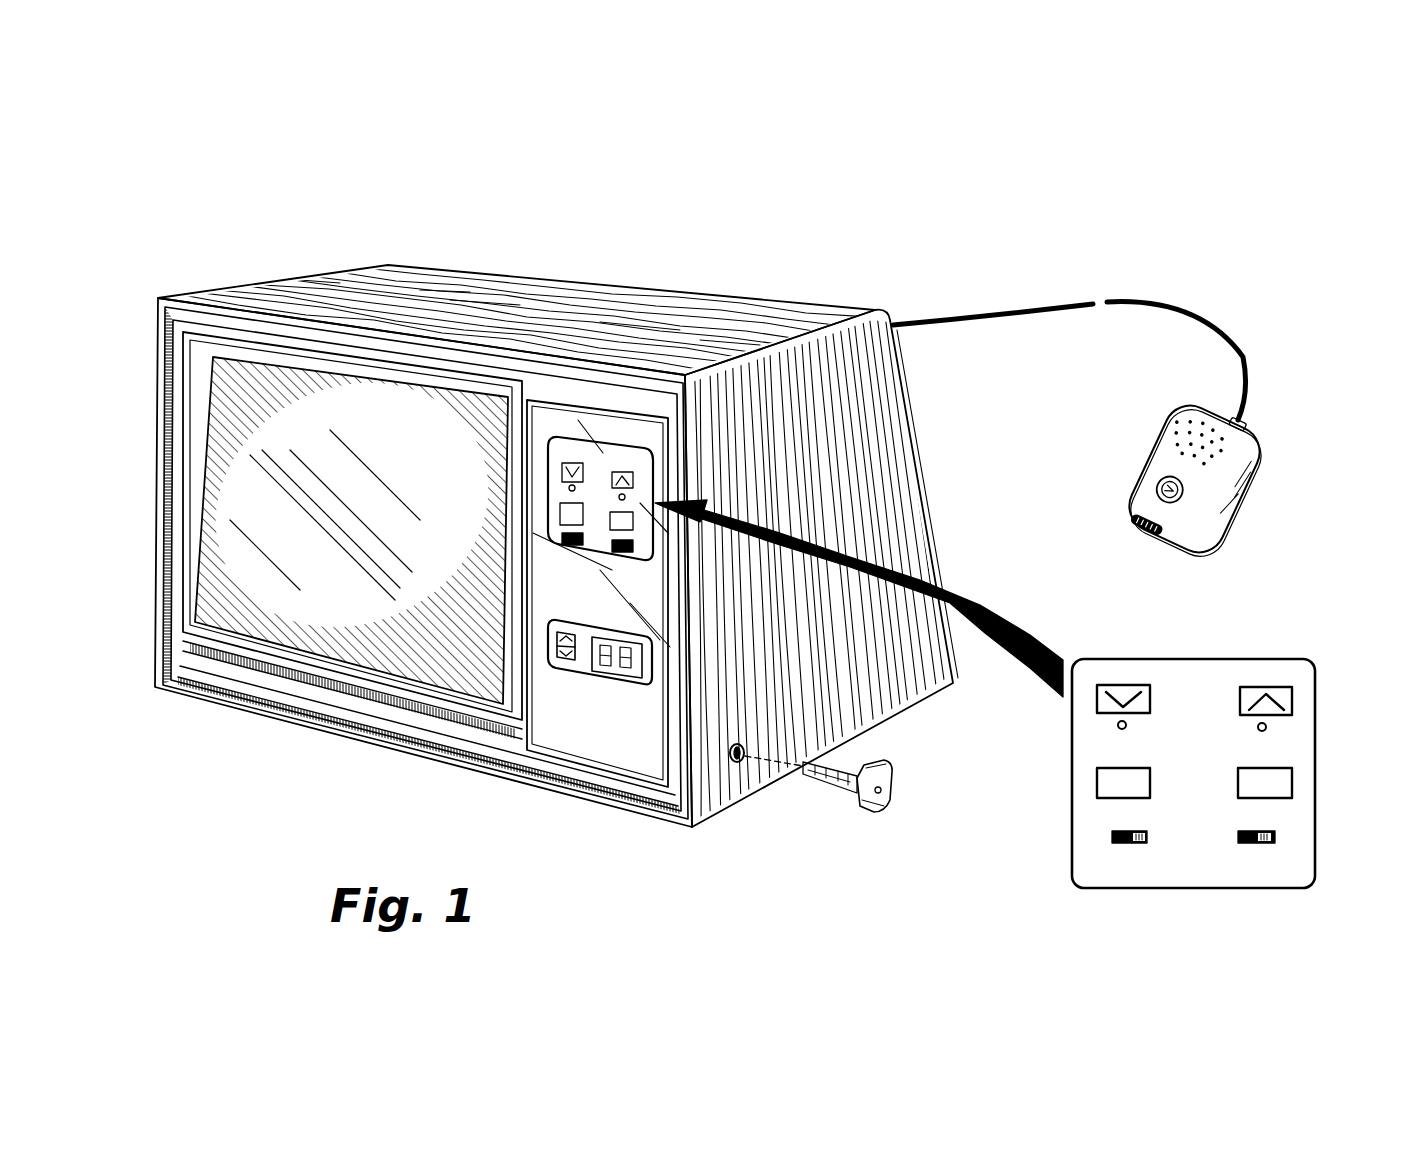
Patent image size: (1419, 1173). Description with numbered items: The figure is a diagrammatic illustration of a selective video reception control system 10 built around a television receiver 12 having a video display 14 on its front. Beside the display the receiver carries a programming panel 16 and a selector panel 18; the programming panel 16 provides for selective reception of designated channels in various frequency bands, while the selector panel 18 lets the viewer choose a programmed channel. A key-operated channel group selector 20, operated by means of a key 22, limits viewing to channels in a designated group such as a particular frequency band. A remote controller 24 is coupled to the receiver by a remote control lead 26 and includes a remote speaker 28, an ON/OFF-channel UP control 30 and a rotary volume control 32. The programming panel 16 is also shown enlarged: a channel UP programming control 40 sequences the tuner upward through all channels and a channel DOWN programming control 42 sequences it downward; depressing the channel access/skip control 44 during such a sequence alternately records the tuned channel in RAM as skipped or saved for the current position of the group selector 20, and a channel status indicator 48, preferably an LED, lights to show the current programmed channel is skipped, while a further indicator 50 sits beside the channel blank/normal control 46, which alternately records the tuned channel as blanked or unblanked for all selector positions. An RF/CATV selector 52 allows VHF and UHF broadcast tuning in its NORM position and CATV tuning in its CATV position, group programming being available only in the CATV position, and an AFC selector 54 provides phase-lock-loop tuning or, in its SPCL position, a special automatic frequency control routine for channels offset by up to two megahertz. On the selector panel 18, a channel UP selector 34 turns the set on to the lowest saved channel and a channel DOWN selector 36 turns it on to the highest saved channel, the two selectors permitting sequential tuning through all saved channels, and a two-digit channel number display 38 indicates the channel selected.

The selective video reception control system 10 is at (784, 266).
The television receiver 12 is at (796, 456).
The video display 14 is at (418, 518).
The programming panel 16 is at (608, 438).
The selector panel 18 is at (594, 692).
The channel group selector 20 is at (740, 768).
The key 22 is at (873, 812).
The remote controller 24 is at (1235, 515).
The remote control lead 26 is at (1033, 317).
The remote speaker 28 is at (1178, 427).
The ON/OFF-channel UP control 30 is at (1157, 487).
The rotary volume control 32 is at (1137, 531).
The channel UP selector 34 is at (525, 752).
The channel DOWN selector 36 is at (567, 661).
The two-digit channel number display 38 is at (643, 676).
The channel UP programming control 40 is at (1283, 698).
The channel DOWN programming control 42 is at (1120, 688).
The channel access/skip control 44 is at (1108, 784).
The channel blank/normal control 46 is at (1283, 781).
The channel status indicator 48 is at (1118, 725).
The blank/norm indicator 50 is at (1266, 727).
The RF/CATV selector 52 is at (1112, 838).
The AFC selector 54 is at (1270, 843).